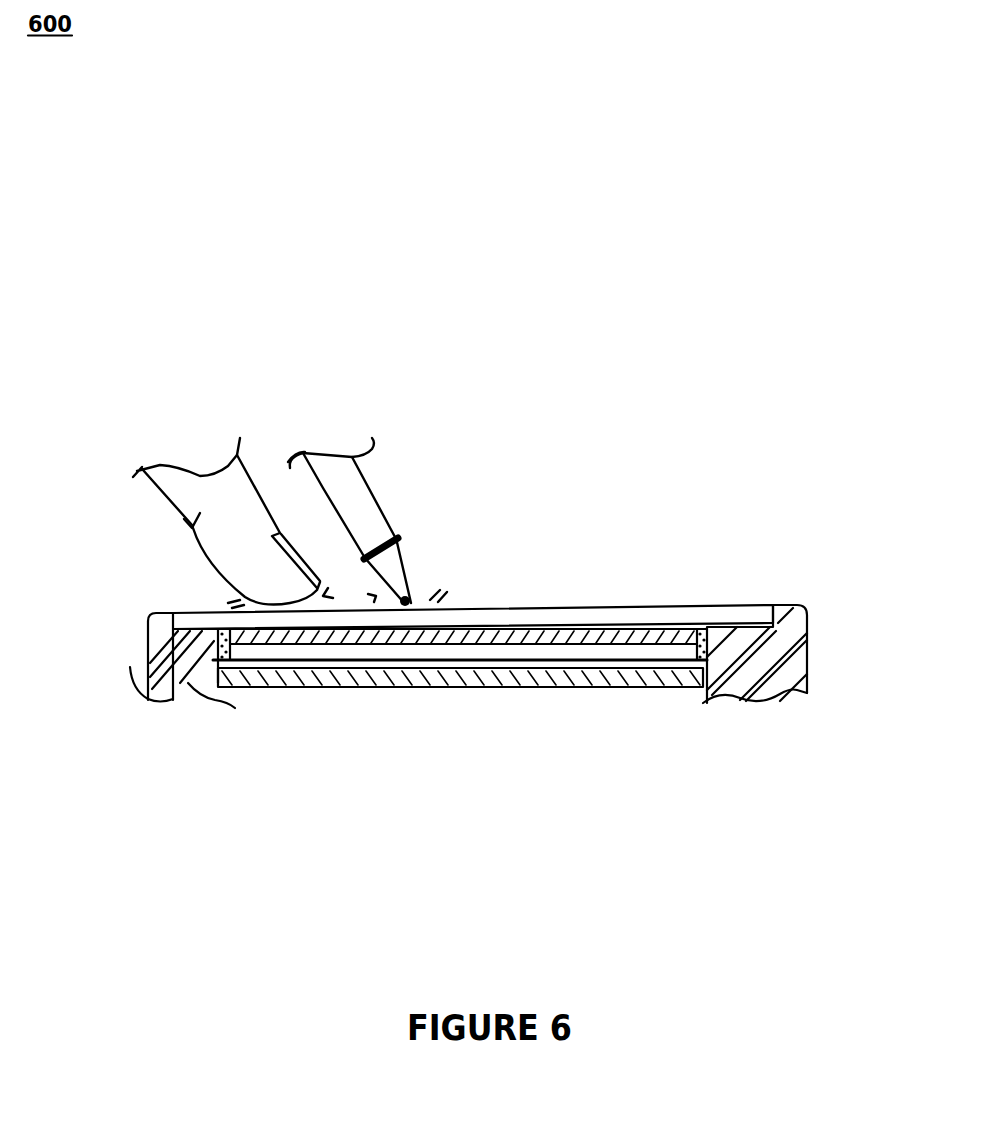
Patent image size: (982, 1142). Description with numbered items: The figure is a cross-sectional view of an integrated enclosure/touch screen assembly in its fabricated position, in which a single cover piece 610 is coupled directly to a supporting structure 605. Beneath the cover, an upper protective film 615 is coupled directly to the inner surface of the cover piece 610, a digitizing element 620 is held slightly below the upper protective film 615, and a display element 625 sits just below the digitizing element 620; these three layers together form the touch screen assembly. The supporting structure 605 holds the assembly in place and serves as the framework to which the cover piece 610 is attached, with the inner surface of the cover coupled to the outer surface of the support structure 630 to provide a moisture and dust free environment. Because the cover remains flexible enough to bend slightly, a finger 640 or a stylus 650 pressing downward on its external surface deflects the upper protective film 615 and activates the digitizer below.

The supporting structure 605 is at (162, 707).
The single cover piece 610 is at (603, 605).
The upper protective film 615 is at (577, 645).
The digitizing element 620 is at (519, 661).
The display element 625 is at (447, 687).
The outer surface of the support structure 630 is at (192, 688).
The finger 640 is at (192, 468).
The stylus 650 is at (330, 452).